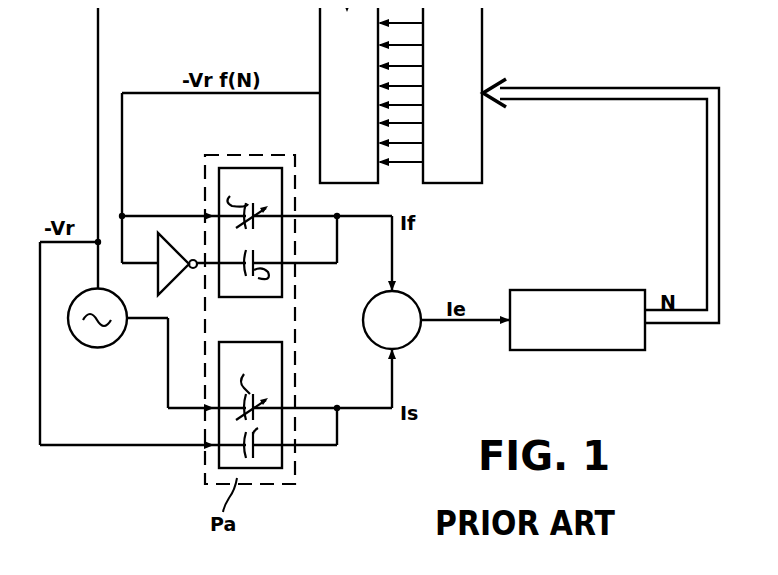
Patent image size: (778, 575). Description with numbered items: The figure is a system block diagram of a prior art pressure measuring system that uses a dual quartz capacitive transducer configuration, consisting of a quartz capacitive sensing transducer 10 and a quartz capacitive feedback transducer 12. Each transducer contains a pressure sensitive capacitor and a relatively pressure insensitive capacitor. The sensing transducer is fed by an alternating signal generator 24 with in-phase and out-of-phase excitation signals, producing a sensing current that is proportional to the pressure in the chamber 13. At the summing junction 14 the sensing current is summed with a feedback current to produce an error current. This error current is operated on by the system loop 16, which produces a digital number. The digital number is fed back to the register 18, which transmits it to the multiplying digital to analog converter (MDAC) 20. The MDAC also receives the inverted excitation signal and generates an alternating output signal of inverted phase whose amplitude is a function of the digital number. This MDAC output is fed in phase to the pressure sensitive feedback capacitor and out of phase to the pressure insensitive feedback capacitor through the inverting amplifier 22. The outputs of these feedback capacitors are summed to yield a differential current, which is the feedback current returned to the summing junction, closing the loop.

The quartz capacitive sensing transducer 10 is at (256, 168).
The quartz capacitive feedback transducer 12 is at (260, 342).
The chamber 13 is at (296, 470).
The summing junction 14 is at (404, 300).
The system loop 16 is at (636, 342).
The register 18 is at (482, 17).
The multiplying digital to analog converter (MDAC) 20 is at (326, 19).
The inverting amplifier 22 is at (160, 280).
The alternating signal generator 24 is at (97, 348).